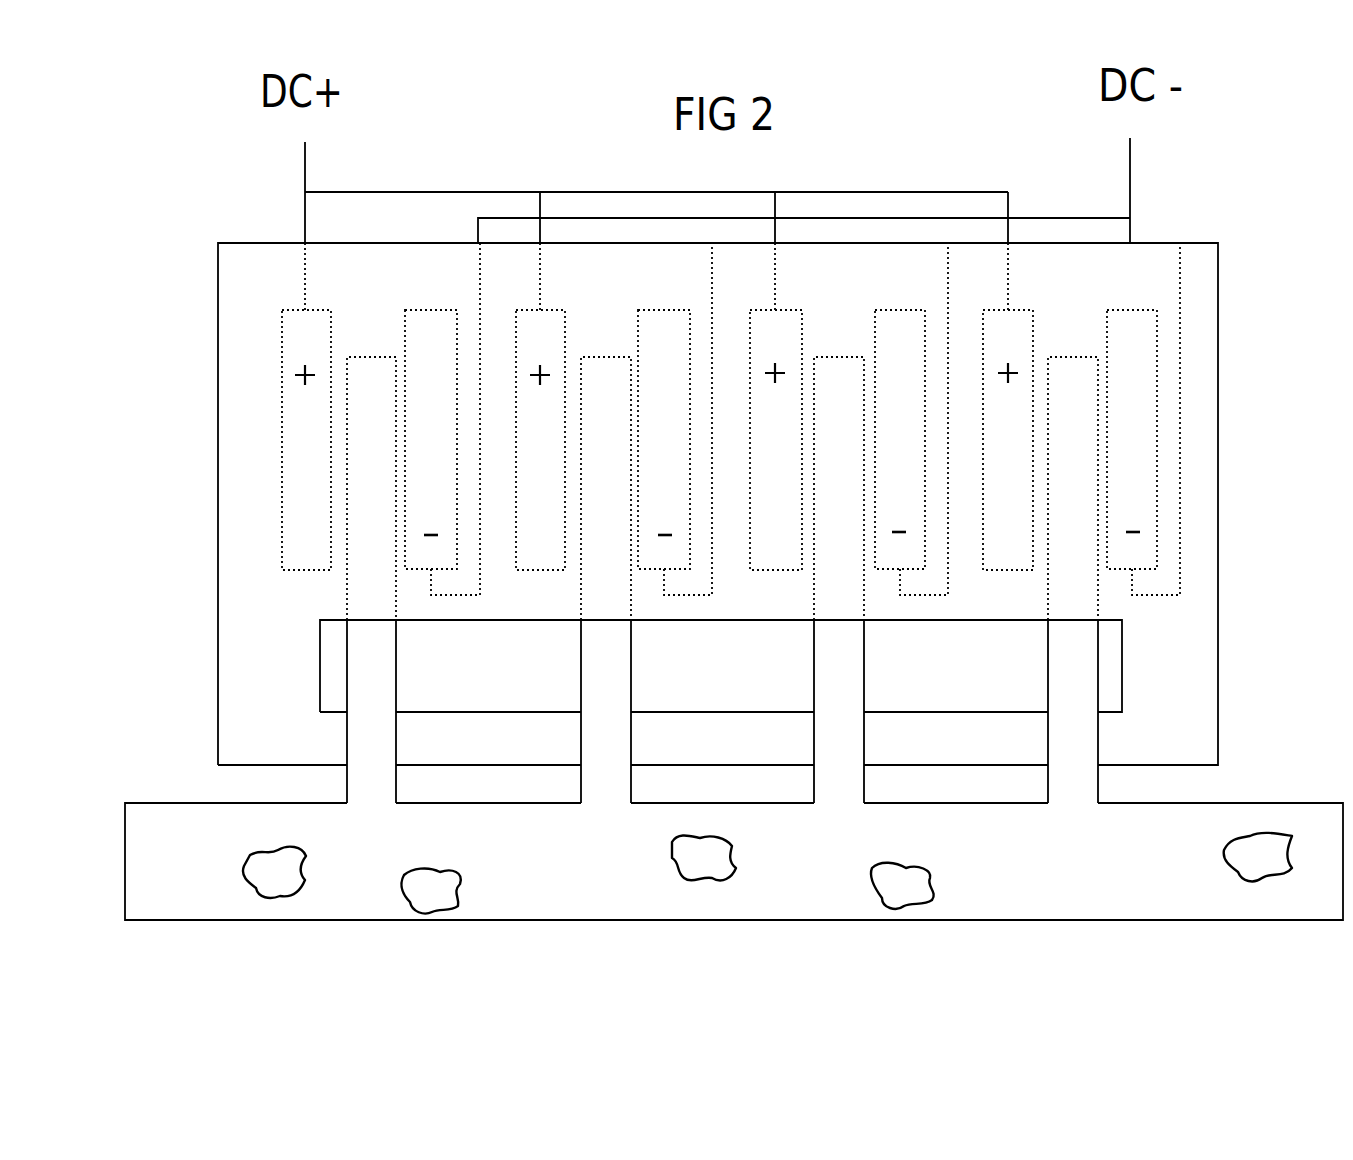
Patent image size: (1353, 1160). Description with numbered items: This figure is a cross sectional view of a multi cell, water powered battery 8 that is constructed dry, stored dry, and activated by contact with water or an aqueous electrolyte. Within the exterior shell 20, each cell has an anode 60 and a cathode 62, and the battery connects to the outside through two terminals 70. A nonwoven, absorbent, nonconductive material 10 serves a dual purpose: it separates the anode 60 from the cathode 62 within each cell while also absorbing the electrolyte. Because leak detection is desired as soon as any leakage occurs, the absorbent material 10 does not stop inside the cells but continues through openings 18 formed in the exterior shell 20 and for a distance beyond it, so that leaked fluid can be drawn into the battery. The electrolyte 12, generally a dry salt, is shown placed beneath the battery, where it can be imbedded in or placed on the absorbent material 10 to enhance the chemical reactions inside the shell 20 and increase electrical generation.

The water powered battery 8 is at (178, 336).
The absorbent material 10 is at (363, 387).
The electrolyte 12 is at (448, 885).
The openings 18 is at (1112, 667).
The exterior shell 20 is at (1218, 278).
The anode 60 is at (297, 527).
The cathode 62 is at (661, 335).
The terminals 70 is at (300, 150).